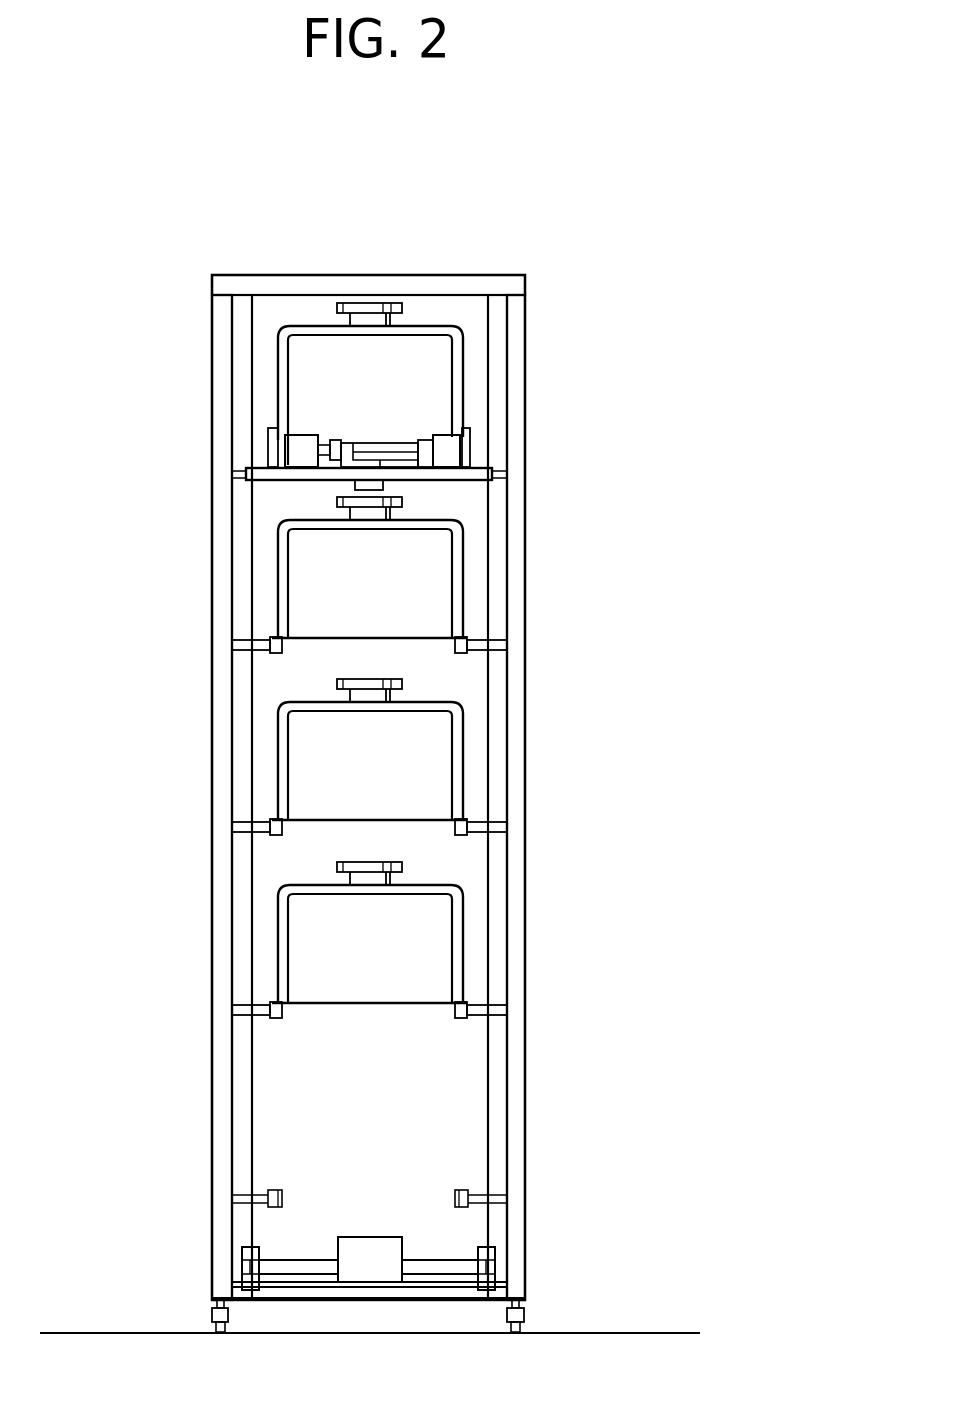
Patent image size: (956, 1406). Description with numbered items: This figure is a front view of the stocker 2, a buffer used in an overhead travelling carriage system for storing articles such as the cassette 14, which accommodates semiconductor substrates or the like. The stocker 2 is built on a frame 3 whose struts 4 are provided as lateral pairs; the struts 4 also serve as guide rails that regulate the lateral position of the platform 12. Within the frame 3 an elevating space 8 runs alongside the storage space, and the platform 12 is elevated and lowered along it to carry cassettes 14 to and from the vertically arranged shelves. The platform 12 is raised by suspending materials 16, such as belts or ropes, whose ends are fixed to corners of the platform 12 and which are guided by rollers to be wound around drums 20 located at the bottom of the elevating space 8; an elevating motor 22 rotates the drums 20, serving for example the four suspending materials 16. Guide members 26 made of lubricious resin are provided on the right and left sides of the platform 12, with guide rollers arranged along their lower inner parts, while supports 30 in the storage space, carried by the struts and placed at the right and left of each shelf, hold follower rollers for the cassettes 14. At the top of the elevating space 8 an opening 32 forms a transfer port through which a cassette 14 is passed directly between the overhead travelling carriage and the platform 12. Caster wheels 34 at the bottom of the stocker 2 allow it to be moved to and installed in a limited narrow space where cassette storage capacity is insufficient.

The stocker 2 is at (178, 258).
The frame 3 is at (538, 564).
The strut 4 is at (220, 751).
The elevating space 8 is at (458, 307).
The platform 12 is at (300, 483).
The cassette 14 is at (375, 393).
The suspending material 16 is at (252, 1102).
The drum 20 is at (245, 1250).
The elevating motor 22 is at (373, 1237).
The guide member 26 is at (273, 447).
The support 30 is at (272, 639).
The opening 32 is at (336, 278).
The caster wheel 34 is at (213, 1312).